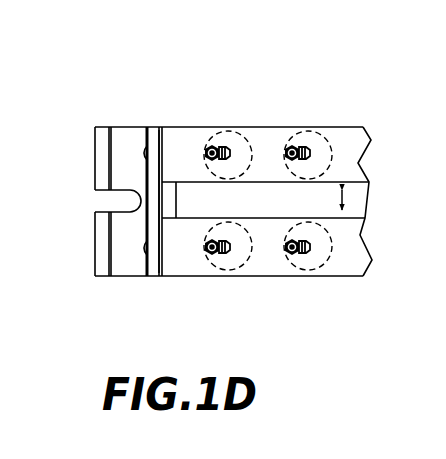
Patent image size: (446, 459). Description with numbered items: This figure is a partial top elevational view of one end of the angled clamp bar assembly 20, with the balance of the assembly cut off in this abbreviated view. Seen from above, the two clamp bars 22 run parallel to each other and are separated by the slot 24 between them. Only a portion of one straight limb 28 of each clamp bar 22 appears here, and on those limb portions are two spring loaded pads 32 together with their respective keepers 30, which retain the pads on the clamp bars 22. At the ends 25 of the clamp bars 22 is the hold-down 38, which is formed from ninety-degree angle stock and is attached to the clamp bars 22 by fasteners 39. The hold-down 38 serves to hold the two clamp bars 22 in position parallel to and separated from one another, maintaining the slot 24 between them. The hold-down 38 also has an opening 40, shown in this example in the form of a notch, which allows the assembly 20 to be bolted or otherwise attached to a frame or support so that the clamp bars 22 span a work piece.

The angled clamp bar assembly 20 is at (302, 79).
The clamp bar 22 is at (360, 138).
The slot 24 is at (343, 201).
The end 25 is at (141, 97).
The straight limb 28 is at (268, 52).
The keeper 30 is at (207, 145).
The spring loaded pad 32 is at (251, 131).
The hold-down 38 is at (123, 246).
The fastener 39 is at (143, 152).
The opening 40 is at (99, 202).